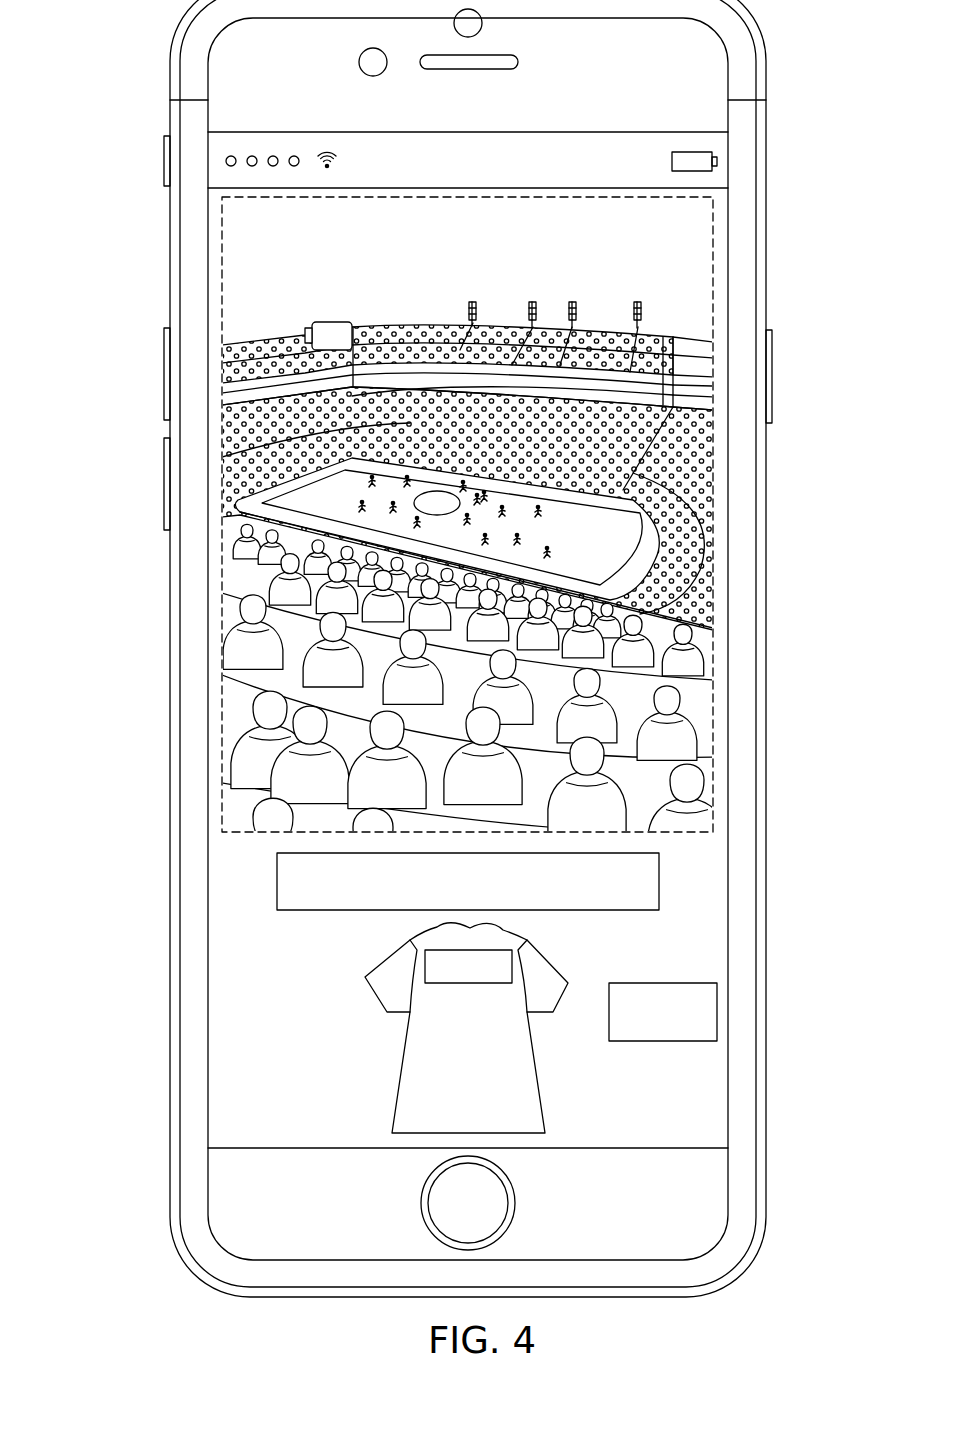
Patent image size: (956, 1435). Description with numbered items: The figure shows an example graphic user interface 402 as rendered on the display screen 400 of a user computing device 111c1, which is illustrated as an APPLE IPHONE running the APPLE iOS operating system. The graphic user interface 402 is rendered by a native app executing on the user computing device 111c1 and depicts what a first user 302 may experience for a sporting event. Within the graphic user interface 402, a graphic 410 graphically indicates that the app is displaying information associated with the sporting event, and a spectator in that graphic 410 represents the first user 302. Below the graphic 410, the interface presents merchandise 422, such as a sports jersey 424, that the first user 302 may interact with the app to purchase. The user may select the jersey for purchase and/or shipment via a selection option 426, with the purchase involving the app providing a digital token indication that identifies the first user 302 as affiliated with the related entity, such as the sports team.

The user computing device 111c1 is at (146, 92).
The display screen 400 is at (727, 154).
The graphic user interface 402 is at (722, 205).
The graphic 410 is at (531, 581).
The first user 302 is at (487, 775).
The merchandise 422 is at (651, 870).
The merchandise item (team shirt) 424 is at (539, 959).
The selection option 426 is at (717, 1020).